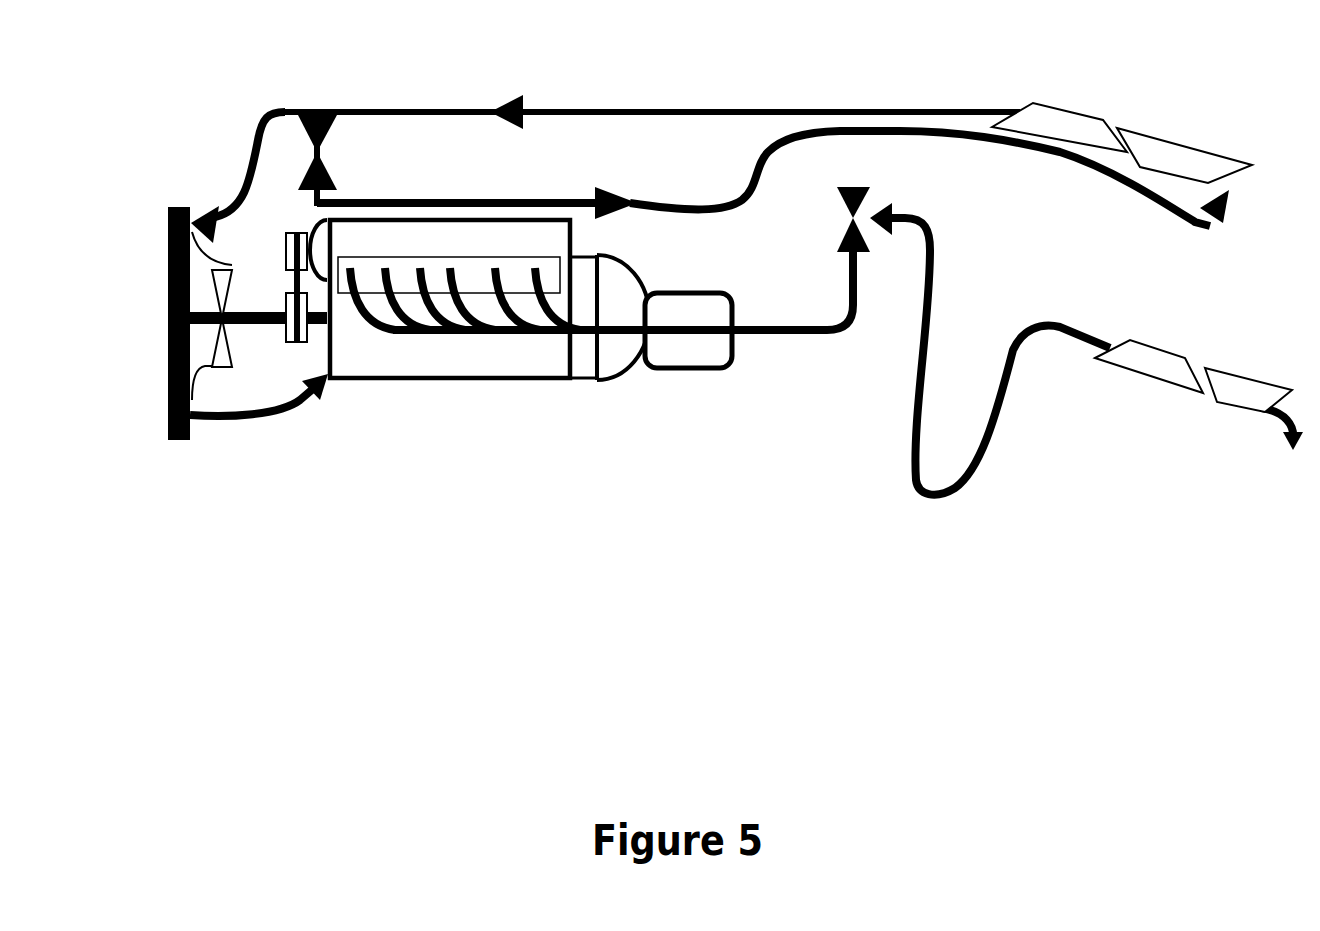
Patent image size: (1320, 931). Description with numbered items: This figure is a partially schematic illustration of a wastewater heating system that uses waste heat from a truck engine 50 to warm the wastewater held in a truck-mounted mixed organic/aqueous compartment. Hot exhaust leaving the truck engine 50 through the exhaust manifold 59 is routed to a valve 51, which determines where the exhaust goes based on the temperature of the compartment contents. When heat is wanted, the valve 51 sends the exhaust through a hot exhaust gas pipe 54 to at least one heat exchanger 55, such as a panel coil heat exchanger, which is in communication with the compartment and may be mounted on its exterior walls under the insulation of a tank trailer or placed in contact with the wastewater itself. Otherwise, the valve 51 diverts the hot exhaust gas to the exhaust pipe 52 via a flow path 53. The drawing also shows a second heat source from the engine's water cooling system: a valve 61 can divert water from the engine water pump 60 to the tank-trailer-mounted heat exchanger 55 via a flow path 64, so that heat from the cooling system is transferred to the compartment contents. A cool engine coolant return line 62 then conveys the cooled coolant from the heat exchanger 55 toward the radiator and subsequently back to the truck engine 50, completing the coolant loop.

The truck engine 50 is at (442, 403).
The valve 51 is at (822, 228).
The exhaust pipe 52 is at (1248, 429).
The flow path 53 is at (145, 232).
The hot exhaust gas pipe 54 is at (972, 448).
The heat exchanger 55 is at (1141, 130).
The exhaust manifold 59 is at (523, 355).
The engine water pump 60 is at (292, 208).
The valve 61 is at (342, 170).
The cool engine coolant return line 62 is at (708, 130).
The flow path 64 is at (999, 153).